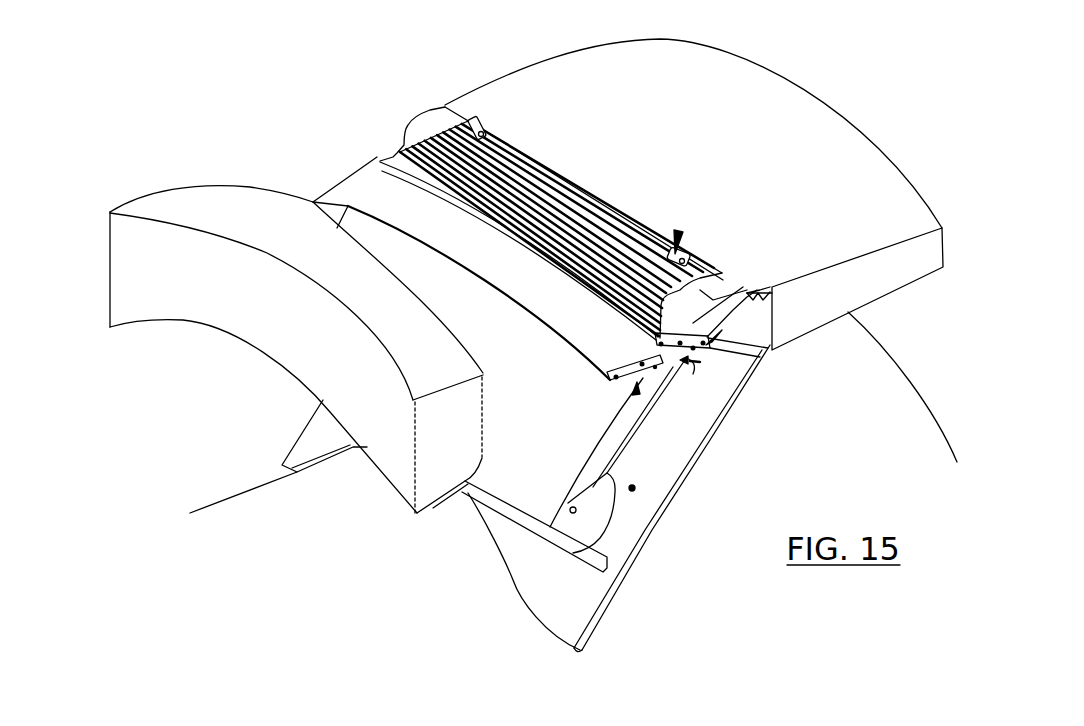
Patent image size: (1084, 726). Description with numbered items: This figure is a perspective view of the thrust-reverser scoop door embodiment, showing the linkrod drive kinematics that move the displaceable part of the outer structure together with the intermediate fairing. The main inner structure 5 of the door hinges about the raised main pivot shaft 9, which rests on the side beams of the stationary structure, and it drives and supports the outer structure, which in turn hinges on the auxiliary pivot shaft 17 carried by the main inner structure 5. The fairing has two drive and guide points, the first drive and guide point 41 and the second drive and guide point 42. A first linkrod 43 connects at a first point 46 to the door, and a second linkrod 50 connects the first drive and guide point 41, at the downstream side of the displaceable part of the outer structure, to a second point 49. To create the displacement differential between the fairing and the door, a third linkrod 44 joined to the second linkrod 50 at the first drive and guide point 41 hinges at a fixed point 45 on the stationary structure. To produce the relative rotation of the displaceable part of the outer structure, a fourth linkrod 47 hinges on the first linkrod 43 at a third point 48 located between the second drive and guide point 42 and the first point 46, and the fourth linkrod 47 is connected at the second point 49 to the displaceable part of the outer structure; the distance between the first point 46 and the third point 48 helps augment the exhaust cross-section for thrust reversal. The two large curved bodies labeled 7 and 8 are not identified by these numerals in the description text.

The first housing block 7 is at (701, 250).
The second housing block 8 is at (296, 349).
The second drive and guide point 42 is at (662, 300).
The main pivot shaft 9 is at (679, 232).
The first linkrod 43 is at (704, 283).
The first point 46 is at (773, 307).
The third linkrod 44 is at (650, 357).
The first drive and guide point 41 is at (607, 375).
The second linkrod 50 is at (600, 416).
The fourth linkrod 47 is at (720, 348).
The third point 48 is at (767, 348).
The fixed point 45 is at (683, 370).
The second point 49 is at (670, 367).
The main inner structure 5 is at (633, 493).
The auxiliary pivot shaft 17 is at (575, 514).